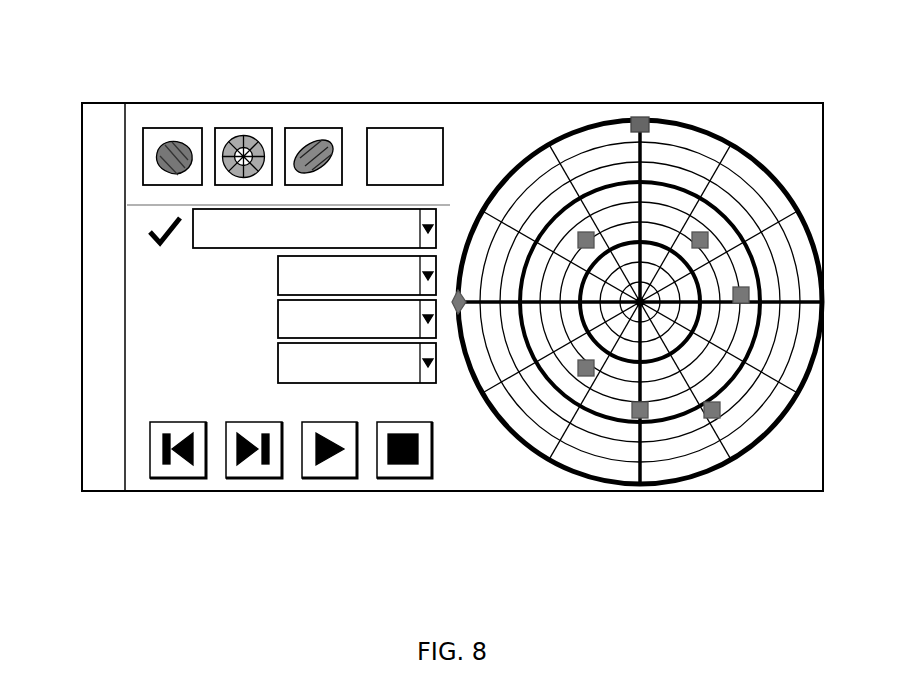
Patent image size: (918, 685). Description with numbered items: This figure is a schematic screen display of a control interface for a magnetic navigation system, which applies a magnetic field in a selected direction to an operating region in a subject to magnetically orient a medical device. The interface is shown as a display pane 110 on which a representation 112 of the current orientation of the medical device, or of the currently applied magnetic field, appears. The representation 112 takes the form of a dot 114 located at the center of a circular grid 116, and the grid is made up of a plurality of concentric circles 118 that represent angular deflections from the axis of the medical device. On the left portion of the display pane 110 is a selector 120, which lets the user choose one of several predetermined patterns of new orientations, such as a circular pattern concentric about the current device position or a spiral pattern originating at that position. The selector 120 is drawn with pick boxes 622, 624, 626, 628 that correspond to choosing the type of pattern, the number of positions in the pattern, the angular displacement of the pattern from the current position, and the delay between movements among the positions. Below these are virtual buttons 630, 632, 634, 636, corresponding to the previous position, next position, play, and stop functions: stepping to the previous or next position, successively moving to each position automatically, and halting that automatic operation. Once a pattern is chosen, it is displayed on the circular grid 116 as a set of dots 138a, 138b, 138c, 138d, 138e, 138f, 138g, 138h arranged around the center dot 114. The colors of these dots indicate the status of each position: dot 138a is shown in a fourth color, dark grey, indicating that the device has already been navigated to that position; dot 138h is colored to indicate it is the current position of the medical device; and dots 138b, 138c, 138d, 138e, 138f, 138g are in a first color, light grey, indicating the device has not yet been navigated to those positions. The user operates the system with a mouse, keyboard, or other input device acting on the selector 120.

The display pane 110 is at (463, 497).
The representation 112 is at (720, 316).
The dot 114 is at (648, 294).
The circular grid 116 is at (553, 463).
The concentric circles 118 is at (608, 435).
The selector 120 is at (403, 193).
The dot 138a is at (650, 110).
The dot 138b is at (708, 234).
The dot 138c is at (748, 282).
The dot 138d is at (740, 430).
The dot 138e is at (693, 433).
The dot 138f is at (545, 320).
The dot 138g is at (470, 350).
The dot 138h is at (565, 228).
The view selection toolbar 622 is at (215, 195).
The mode selection dropdown 624 is at (212, 256).
The points selection dropdown 626 is at (248, 316).
The range and pause selection dropdowns 628 is at (250, 384).
The skip back button 630 is at (190, 467).
The skip forward button 632 is at (247, 466).
The play button 634 is at (333, 466).
The stop button 636 is at (405, 465).